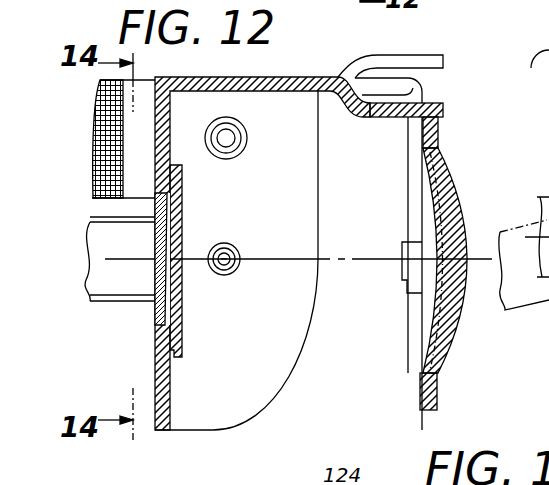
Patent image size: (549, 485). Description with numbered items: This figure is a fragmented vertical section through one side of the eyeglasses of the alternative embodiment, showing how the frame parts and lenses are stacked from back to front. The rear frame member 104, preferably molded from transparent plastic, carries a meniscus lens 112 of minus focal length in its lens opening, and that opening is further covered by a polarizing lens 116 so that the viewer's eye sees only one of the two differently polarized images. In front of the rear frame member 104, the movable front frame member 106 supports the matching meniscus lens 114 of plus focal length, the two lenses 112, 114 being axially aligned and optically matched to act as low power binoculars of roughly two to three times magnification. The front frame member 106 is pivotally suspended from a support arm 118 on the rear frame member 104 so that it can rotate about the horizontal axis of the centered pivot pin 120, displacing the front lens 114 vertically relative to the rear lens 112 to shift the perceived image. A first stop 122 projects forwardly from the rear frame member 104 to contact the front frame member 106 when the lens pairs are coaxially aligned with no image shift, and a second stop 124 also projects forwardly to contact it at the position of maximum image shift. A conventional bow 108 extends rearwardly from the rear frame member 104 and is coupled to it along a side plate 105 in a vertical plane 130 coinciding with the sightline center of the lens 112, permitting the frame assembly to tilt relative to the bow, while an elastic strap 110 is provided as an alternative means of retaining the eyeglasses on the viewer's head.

The rear frame member 104 is at (156, 433).
The side plate 105 is at (213, 412).
The front frame member 106 is at (438, 395).
The bow 108 is at (95, 238).
The elastic strap 110 is at (98, 101).
The meniscus lens 112 is at (158, 303).
The meniscus lens 114 is at (458, 218).
The polarizing lens 116 is at (178, 353).
The support arm 118 is at (411, 135).
The pivot pin 120 is at (404, 271).
The first stop 122 is at (438, 107).
The second stop 124 is at (427, 58).
The vertical plane 130 is at (272, 257).